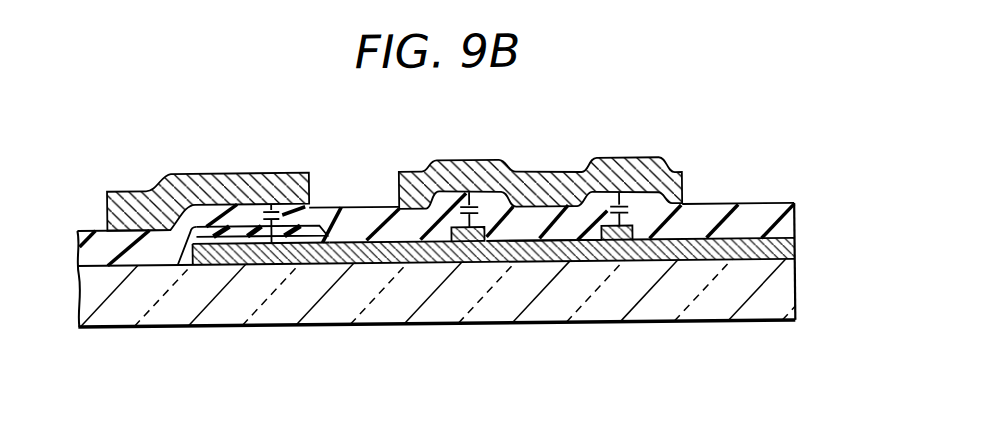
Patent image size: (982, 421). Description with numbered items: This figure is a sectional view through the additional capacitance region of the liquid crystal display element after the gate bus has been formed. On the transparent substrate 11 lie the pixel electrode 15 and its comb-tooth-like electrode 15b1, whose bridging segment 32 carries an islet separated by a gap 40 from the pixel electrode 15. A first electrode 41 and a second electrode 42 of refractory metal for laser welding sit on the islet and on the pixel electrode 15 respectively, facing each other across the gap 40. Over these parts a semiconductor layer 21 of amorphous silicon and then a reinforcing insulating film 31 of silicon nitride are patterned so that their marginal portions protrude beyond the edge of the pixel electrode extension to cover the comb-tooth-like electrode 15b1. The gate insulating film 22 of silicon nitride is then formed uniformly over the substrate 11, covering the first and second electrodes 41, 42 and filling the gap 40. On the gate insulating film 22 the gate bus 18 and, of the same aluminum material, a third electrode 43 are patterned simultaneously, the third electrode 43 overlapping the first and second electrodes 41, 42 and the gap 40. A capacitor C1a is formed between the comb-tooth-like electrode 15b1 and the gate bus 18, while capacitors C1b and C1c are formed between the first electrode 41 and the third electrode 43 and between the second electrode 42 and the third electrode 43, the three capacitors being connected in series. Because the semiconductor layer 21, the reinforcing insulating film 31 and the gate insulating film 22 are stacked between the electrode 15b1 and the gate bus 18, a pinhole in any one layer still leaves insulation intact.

The transparent substrate 11 is at (784, 297).
The pixel electrode 15 is at (798, 249).
The comb-tooth-like electrode 15b1 is at (257, 265).
The gate bus 18 is at (170, 174).
The semiconductor layer 21 is at (218, 268).
The gate insulating film 22 is at (790, 230).
The reinforcing insulating film 31 is at (206, 236).
The bridging segment 32 is at (405, 257).
The gap 40 is at (544, 250).
The first electrode 41 is at (458, 257).
The second electrode 42 is at (620, 248).
The third electrode 43 is at (487, 166).
The capacitor C1a is at (306, 209).
The capacitor C1b is at (461, 208).
The capacitor C1c is at (640, 214).